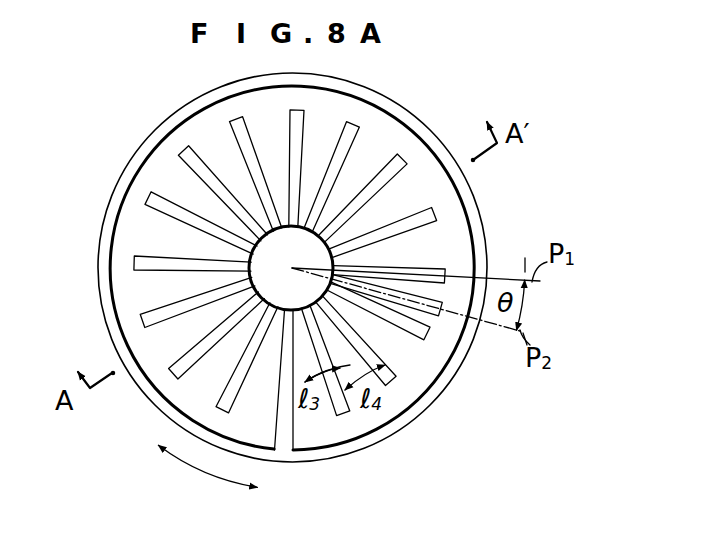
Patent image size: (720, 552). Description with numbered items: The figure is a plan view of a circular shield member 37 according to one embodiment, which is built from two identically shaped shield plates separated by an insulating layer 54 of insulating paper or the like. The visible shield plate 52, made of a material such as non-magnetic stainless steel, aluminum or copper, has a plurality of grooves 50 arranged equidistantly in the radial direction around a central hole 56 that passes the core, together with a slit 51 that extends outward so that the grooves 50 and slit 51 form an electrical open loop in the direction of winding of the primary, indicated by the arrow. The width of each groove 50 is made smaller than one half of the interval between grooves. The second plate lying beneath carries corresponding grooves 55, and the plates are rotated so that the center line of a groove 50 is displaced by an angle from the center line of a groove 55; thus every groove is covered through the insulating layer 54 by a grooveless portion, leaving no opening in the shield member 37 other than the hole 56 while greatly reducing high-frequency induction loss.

The shield member 37 is at (518, 210).
The groove 50 is at (343, 415).
The slit 51 is at (282, 437).
The shield plate 52 is at (319, 294).
The insulating layer 54 is at (410, 412).
The groove 55 is at (443, 315).
The hole 56 is at (258, 262).